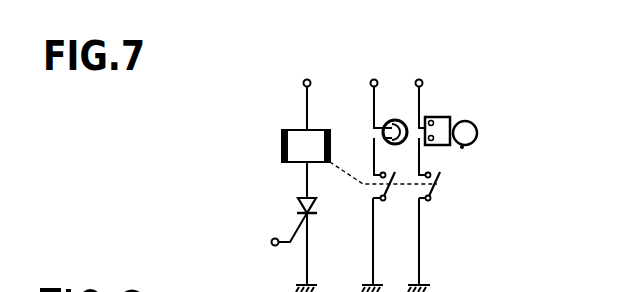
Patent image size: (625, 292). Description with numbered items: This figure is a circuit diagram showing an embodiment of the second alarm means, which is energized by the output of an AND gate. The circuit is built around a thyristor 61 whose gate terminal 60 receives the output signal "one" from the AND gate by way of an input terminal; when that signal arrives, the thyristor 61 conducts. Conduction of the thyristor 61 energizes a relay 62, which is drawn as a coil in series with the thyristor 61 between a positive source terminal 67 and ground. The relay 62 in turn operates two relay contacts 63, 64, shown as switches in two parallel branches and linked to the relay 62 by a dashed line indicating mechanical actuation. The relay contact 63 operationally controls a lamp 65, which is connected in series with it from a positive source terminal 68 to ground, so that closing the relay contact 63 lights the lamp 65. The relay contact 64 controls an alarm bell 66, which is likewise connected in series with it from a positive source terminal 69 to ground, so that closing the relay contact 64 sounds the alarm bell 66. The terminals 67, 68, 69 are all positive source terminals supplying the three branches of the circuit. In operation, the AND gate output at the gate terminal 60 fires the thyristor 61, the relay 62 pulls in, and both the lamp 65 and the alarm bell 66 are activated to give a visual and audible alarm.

The gate terminal 60 is at (274, 247).
The thyristor 61 is at (315, 207).
The relay 62 is at (299, 143).
The relay contact 63 is at (391, 201).
The relay contact 64 is at (436, 202).
The lamp 65 is at (396, 118).
The alarm bell 66 is at (439, 120).
The positive source terminal 67 is at (311, 80).
The positive source terminal 68 is at (378, 81).
The positive source terminal 69 is at (424, 81).